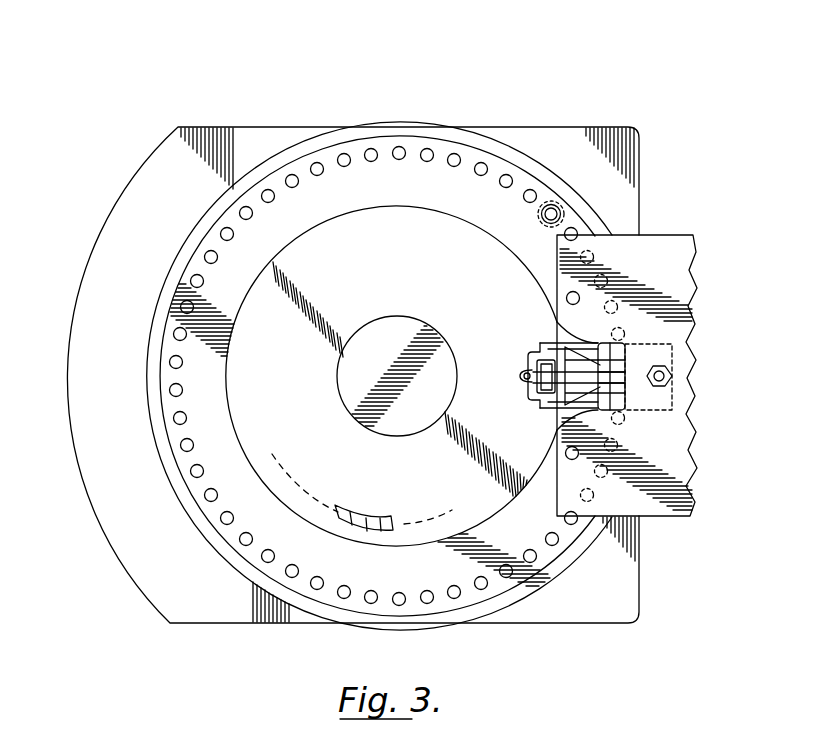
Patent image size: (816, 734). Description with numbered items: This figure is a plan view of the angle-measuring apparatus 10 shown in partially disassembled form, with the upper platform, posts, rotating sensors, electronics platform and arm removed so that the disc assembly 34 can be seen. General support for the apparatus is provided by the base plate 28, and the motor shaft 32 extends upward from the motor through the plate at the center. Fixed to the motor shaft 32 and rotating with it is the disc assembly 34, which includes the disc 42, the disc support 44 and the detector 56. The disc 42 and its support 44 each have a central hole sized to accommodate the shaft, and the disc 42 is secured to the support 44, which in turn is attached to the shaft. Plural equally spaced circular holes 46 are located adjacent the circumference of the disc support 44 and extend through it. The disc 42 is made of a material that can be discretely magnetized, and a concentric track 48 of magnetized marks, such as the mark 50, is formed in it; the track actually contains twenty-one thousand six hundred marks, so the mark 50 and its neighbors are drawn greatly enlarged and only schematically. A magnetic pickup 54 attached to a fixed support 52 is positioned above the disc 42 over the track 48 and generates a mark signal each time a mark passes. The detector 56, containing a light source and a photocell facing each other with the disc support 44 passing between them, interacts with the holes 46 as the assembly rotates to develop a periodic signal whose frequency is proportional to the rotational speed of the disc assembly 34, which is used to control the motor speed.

The angle-measuring apparatus 10 is at (613, 108).
The base plate 28 is at (155, 177).
The motor shaft 32 is at (369, 324).
The disc assembly 34 is at (258, 163).
The disc 42 is at (430, 209).
The disc support 44 is at (545, 553).
The circular holes 46 is at (344, 167).
The track 48 is at (345, 496).
The mark 50 is at (372, 510).
The fixed support 52 is at (660, 236).
The magnetic pickup 54 is at (530, 398).
The detector 56 is at (566, 207).